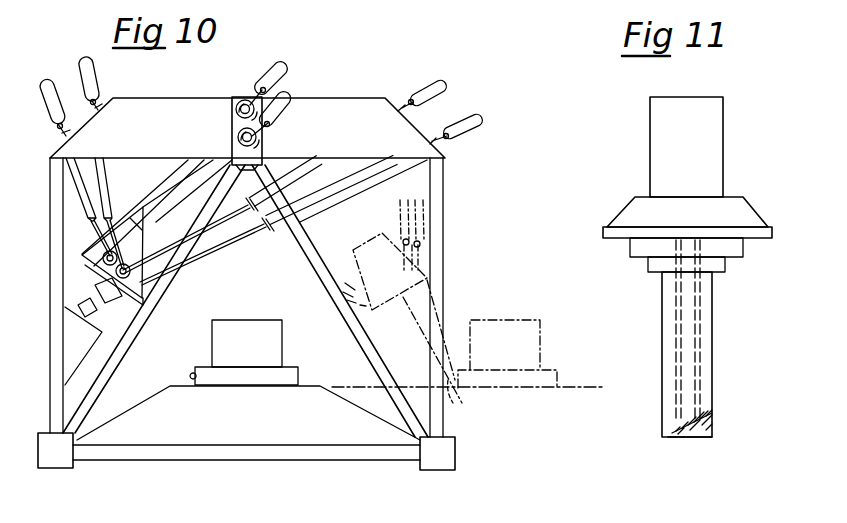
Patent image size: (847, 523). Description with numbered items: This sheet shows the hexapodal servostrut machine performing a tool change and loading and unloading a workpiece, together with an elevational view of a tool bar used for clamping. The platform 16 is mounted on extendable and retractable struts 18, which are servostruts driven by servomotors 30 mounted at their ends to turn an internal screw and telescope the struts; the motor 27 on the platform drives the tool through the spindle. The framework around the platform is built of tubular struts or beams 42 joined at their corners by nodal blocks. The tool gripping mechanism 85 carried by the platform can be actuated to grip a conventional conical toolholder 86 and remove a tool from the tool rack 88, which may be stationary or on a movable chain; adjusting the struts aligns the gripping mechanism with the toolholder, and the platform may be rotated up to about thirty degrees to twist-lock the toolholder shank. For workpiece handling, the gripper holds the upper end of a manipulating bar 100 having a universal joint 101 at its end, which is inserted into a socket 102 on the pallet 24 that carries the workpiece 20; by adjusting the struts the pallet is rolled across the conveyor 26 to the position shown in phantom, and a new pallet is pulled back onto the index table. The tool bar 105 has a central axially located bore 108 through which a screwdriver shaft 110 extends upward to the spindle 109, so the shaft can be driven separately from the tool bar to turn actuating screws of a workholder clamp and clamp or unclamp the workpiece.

In FIG. 11, the platform 16 is at (616, 211).
In FIG. 10, the struts 18 is at (347, 183).
In FIG. 10, the workpiece 20 is at (245, 326).
In FIG. 10, the pallet 24 is at (301, 359).
In FIG. 10, the conveyor 26 is at (585, 387).
In FIG. 11, the motor 27 is at (730, 153).
In FIG. 10, the servomotors 30 is at (473, 127).
In FIG. 10, the struts or beams 42 is at (118, 357).
In FIG. 10, the tool gripping mechanism 85 is at (105, 290).
In FIG. 10, the toolholder 86 is at (80, 303).
In FIG. 10, the tool rack 88 is at (72, 338).
In FIG. 10, the manipulating bar 100 is at (447, 294).
In FIG. 10, the universal joint 101 is at (453, 394).
In FIG. 10, the socket 102 is at (193, 372).
In FIG. 11, the tool bar 105 is at (712, 370).
In FIG. 11, the bore 108 is at (697, 320).
In FIG. 11, the spindle 109 is at (740, 247).
In FIG. 11, the screwdriver shaft 110 is at (695, 438).